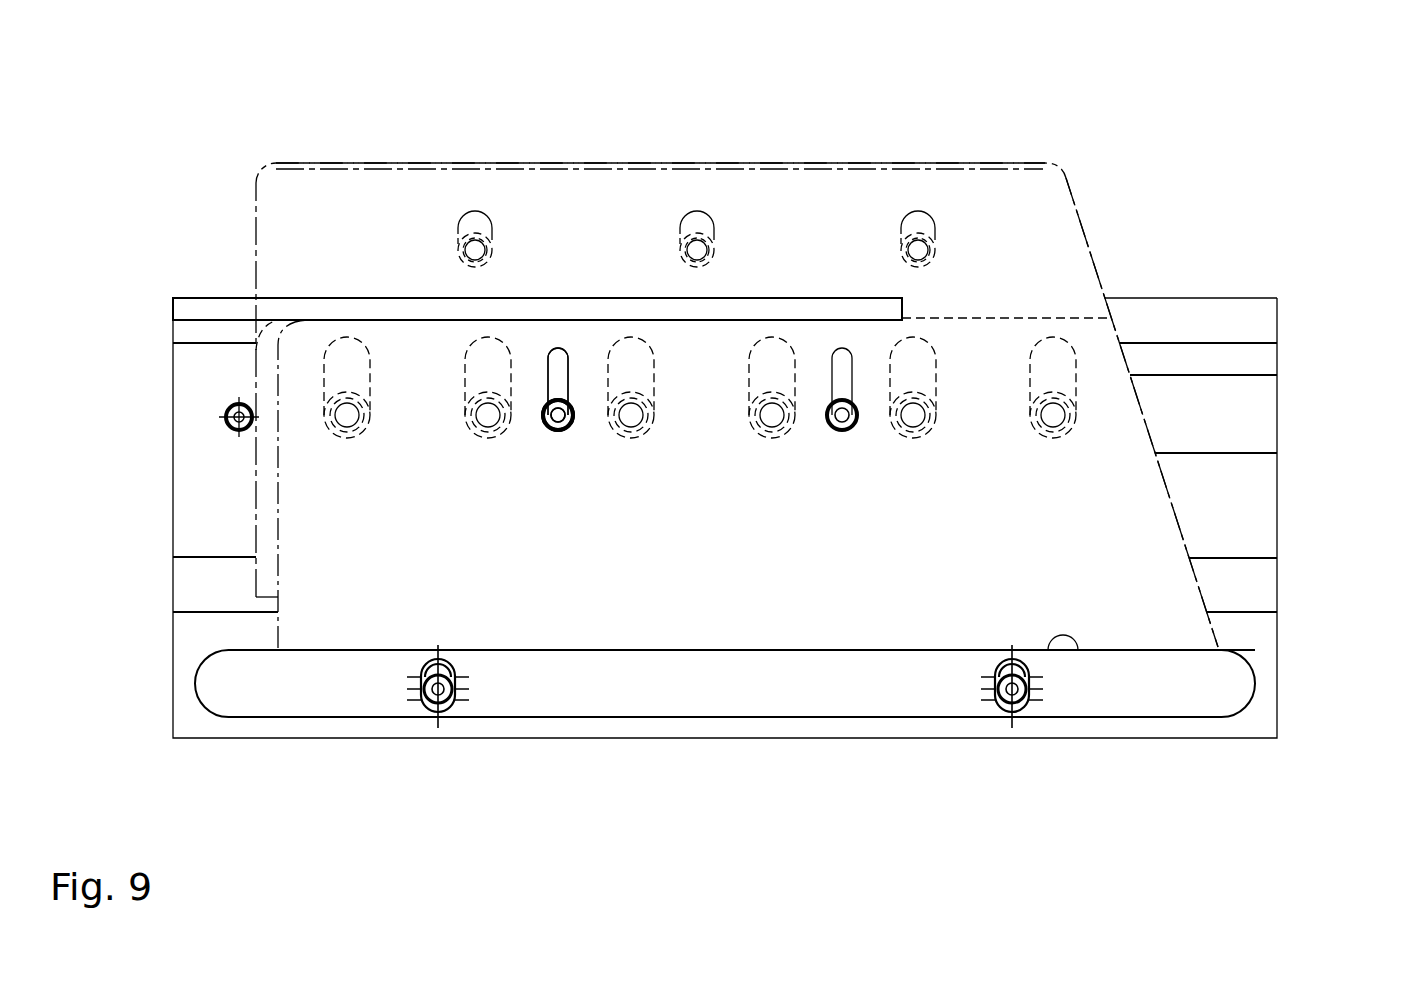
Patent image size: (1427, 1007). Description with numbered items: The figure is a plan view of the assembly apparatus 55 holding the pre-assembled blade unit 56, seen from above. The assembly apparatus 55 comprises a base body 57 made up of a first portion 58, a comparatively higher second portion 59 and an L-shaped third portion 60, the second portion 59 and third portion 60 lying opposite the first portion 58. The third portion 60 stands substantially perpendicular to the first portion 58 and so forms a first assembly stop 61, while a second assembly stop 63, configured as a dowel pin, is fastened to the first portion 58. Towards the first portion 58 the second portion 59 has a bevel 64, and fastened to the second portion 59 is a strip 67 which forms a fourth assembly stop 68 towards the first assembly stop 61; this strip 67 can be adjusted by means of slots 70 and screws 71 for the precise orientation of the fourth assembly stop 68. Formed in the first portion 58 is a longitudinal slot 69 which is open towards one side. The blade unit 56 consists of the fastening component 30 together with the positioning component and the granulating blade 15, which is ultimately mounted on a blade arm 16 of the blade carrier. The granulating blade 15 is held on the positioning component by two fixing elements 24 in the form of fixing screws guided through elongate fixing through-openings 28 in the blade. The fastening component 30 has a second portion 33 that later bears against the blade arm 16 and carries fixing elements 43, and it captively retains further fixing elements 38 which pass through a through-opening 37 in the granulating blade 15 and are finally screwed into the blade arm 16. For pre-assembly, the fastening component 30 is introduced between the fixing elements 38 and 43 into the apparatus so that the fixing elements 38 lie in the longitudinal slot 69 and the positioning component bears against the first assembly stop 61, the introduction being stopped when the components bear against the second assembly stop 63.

The granulating blade 15 is at (793, 600).
The blade arm 16 is at (265, 505).
The fixing element 24 is at (559, 437).
The fixing through-opening 28 is at (571, 372).
The fastening component 30 is at (543, 160).
The second portion 33 is at (920, 185).
The through-opening 37 is at (748, 372).
The fixing element 38 is at (1047, 392).
The fixing element 43 is at (694, 205).
The assembly apparatus 55 is at (1153, 288).
The pre-assembled blade unit 56 is at (803, 160).
The base body 57 is at (1282, 490).
The first portion 58 is at (1260, 500).
The second portion 59 is at (1265, 680).
The third portion 60 is at (185, 312).
The first assembly stop 61 is at (240, 322).
The second assembly stop 63 is at (223, 418).
The bevel 64 is at (1265, 585).
The strip 67 is at (1125, 703).
The fourth assembly stop 68 is at (1050, 652).
The longitudinal slot 69 is at (1260, 413).
The slot 70 is at (997, 667).
The screw 71 is at (997, 705).